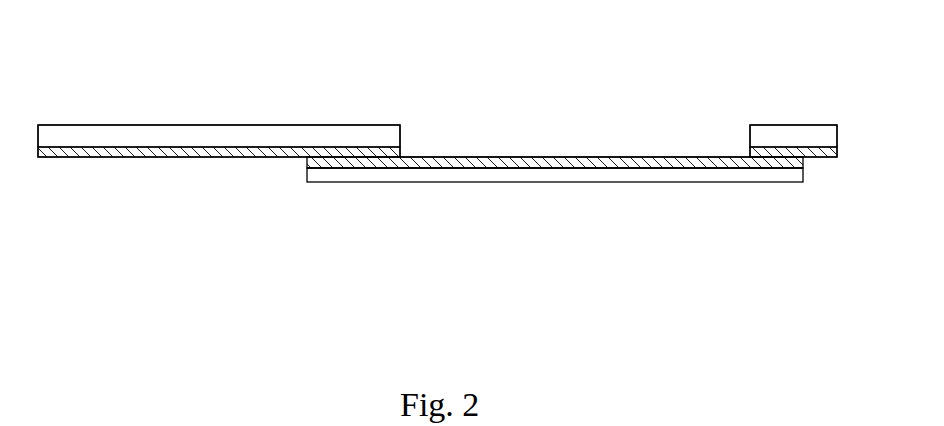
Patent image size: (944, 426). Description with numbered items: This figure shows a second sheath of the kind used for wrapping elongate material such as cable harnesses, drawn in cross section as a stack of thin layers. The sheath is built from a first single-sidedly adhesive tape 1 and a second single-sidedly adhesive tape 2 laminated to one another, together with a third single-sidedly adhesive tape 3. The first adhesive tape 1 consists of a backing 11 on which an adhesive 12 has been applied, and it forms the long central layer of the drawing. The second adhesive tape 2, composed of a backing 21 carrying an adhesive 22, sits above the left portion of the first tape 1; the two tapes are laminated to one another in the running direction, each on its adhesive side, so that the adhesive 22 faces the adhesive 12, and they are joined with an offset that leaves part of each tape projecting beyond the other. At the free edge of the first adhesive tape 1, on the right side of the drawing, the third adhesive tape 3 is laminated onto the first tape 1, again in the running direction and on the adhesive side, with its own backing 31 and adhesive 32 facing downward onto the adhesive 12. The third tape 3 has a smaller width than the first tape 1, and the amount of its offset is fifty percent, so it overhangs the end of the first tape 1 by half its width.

The first single-sidedly adhesive tape 1 is at (497, 168).
The backing 11 is at (468, 172).
The adhesive 12 is at (648, 166).
The second single-sidedly adhesive tape 2 is at (241, 140).
The backing 21 is at (218, 135).
The adhesive 22 is at (284, 148).
The third single-sidedly adhesive tape 3 is at (793, 130).
The backing 31 is at (763, 132).
The adhesive 32 is at (829, 147).